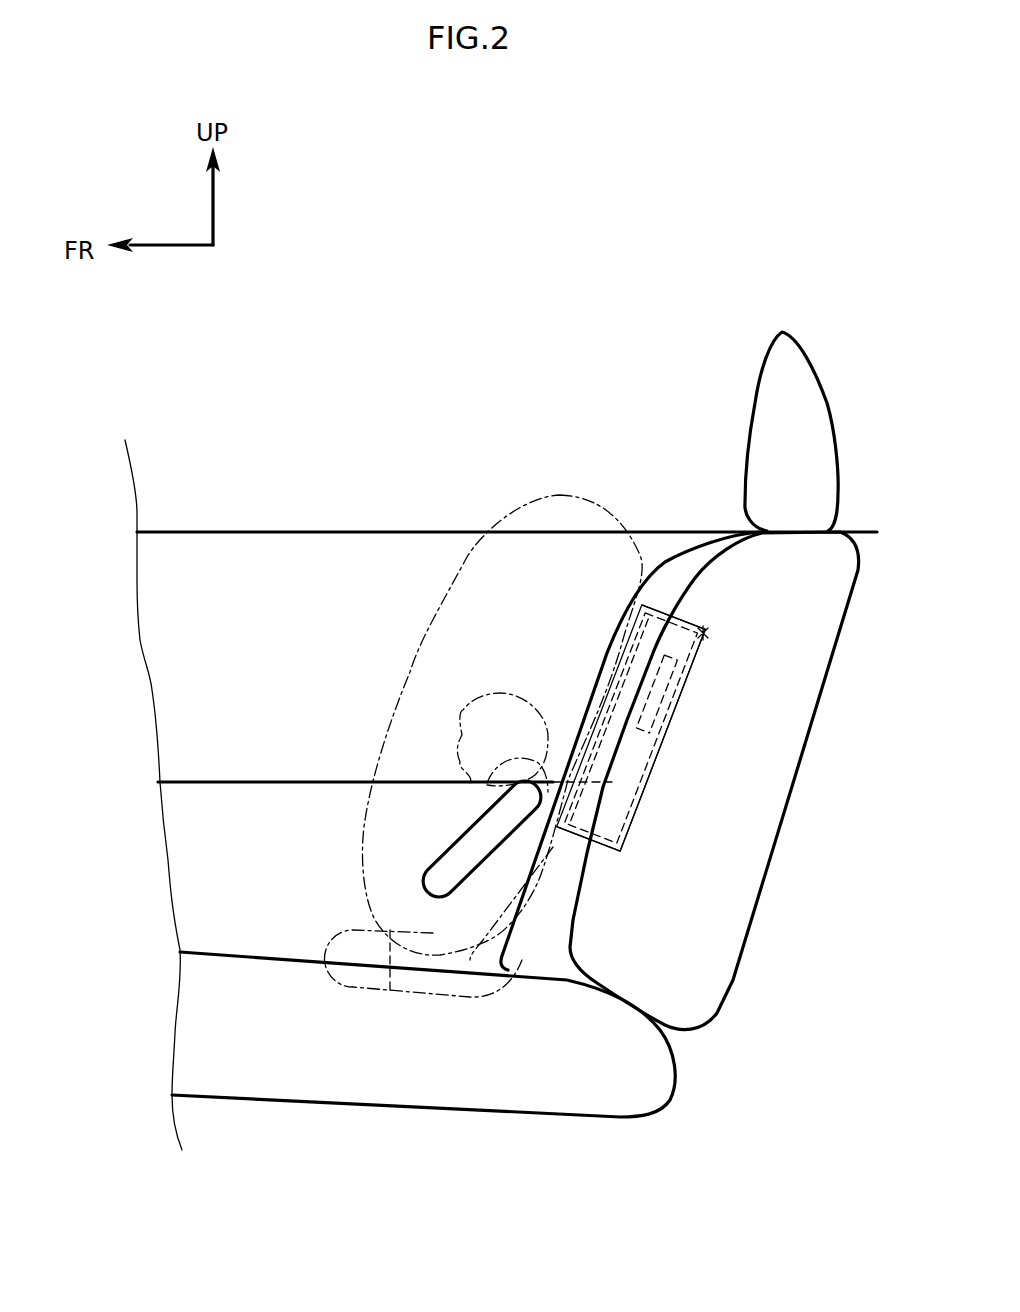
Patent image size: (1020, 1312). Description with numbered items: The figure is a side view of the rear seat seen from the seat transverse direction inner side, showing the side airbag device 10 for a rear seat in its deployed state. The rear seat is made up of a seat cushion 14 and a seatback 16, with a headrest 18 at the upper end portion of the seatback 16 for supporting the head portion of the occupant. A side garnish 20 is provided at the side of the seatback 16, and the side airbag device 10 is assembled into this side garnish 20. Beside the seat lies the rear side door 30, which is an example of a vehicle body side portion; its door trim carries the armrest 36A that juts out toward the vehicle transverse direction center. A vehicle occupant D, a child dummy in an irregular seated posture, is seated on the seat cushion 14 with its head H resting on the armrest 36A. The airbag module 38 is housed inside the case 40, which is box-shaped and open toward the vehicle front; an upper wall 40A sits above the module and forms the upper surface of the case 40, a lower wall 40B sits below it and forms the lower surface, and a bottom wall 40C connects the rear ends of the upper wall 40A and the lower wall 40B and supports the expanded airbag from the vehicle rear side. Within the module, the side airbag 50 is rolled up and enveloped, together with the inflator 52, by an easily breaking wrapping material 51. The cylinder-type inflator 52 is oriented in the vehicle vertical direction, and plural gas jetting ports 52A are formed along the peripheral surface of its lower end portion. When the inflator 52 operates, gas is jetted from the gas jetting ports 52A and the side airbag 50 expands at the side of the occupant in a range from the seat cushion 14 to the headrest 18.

The side airbag device for a rear seat 10 is at (715, 633).
The seat cushion 14 is at (310, 1100).
The seatback 16 is at (730, 982).
The headrest 18 is at (813, 417).
The side garnish 20 is at (648, 593).
The rear side door 30 is at (257, 531).
The armrest 36A is at (385, 723).
The airbag module 38 is at (708, 633).
The case 40 is at (721, 636).
The upper wall 40A is at (663, 612).
The lower wall 40B is at (573, 830).
The bottom wall 40C is at (650, 772).
The side airbag 50 is at (500, 518).
The wrapping material 51 is at (620, 653).
The inflator 52 is at (699, 657).
The gas jetting ports 52A is at (655, 743).
The head of occupant H is at (478, 722).
The vehicle occupant D is at (488, 694).